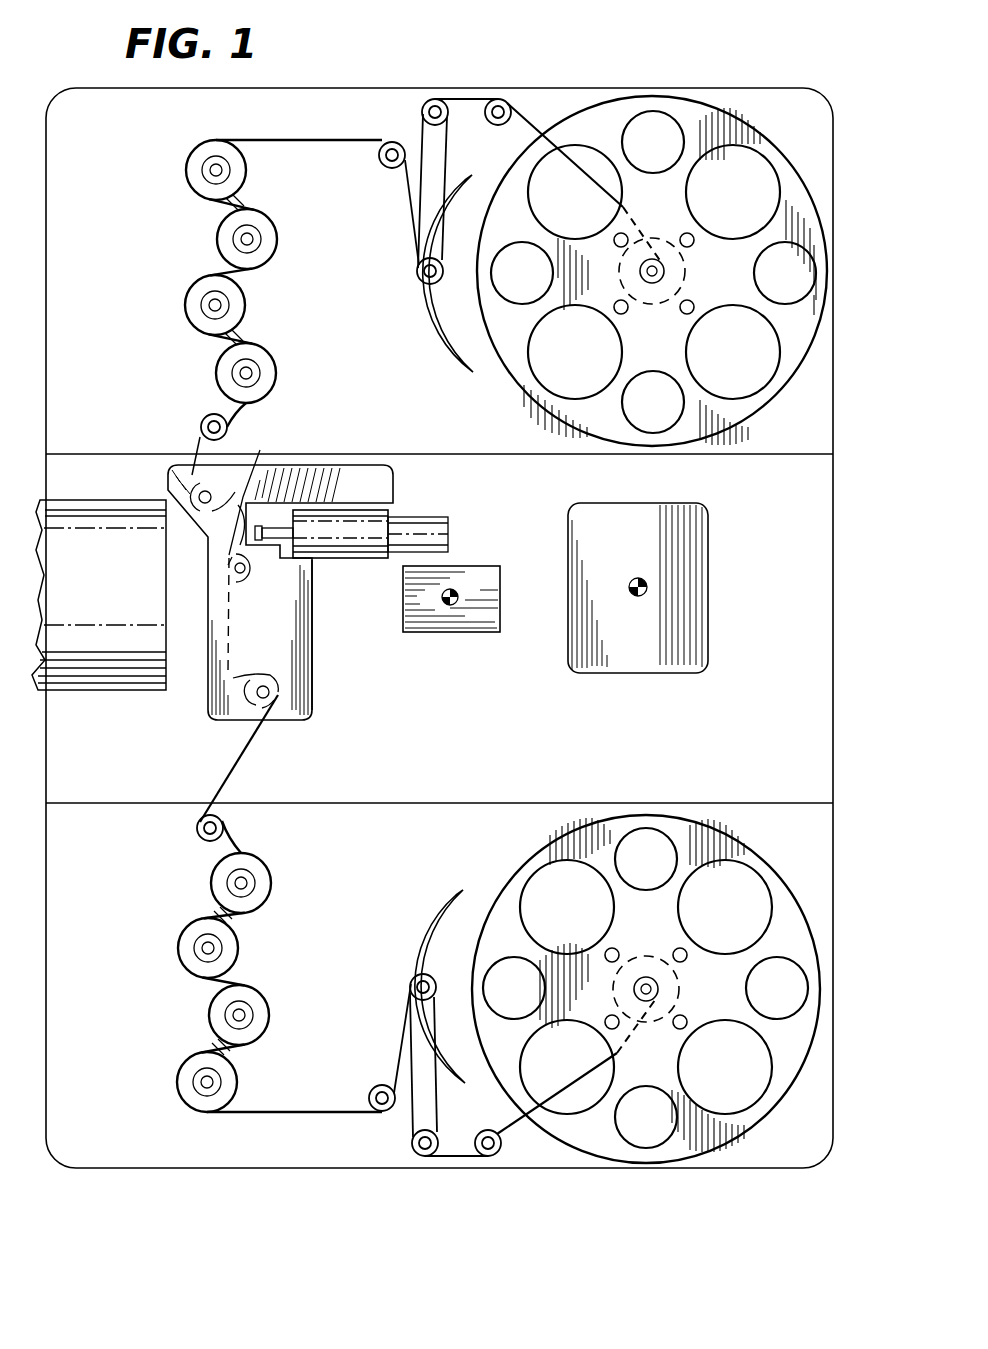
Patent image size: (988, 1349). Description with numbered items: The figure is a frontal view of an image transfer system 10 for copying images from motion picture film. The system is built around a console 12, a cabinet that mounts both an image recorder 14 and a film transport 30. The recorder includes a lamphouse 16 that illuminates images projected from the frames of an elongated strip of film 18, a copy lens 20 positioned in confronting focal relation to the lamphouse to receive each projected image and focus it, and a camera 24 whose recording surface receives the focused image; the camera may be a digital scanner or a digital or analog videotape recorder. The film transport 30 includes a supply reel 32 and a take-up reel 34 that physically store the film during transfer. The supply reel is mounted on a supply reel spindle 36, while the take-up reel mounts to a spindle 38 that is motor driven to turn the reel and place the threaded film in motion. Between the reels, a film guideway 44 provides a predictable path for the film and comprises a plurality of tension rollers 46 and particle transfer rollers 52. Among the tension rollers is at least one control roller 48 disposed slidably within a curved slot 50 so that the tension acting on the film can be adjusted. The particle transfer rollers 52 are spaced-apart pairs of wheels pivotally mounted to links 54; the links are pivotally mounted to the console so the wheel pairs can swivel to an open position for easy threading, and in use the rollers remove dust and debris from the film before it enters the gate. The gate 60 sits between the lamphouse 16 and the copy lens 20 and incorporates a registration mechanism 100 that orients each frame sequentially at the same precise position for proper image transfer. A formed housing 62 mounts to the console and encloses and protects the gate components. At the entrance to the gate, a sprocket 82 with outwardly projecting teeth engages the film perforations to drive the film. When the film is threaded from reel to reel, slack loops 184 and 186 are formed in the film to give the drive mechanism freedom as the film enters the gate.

The image transfer system 10 is at (722, 72).
The console 12 is at (426, 88).
The image recorder 14 is at (598, 626).
The lamphouse 16 is at (122, 497).
The film 18 is at (258, 774).
The copy lens 20 is at (450, 633).
The camera 24 is at (712, 556).
The film transport 30 is at (432, 750).
The supply reel 32 is at (520, 860).
The take-up reel 34 is at (545, 412).
The supply reel spindle 36 is at (660, 993).
The take-up reel spindle 38 is at (666, 276).
The film guideway 44 is at (160, 138).
The tension rollers 46 is at (422, 104).
The control roller 48 is at (419, 262).
The curved slot 50 is at (436, 340).
The particle transfer rollers 52 is at (207, 348).
The links 54 is at (245, 205).
The gate 60 is at (192, 687).
The housing 62 is at (318, 672).
The sprocket 82 is at (233, 570).
The registration mechanism 100 is at (326, 560).
The loop 184 is at (212, 722).
The loop 186 is at (257, 458).